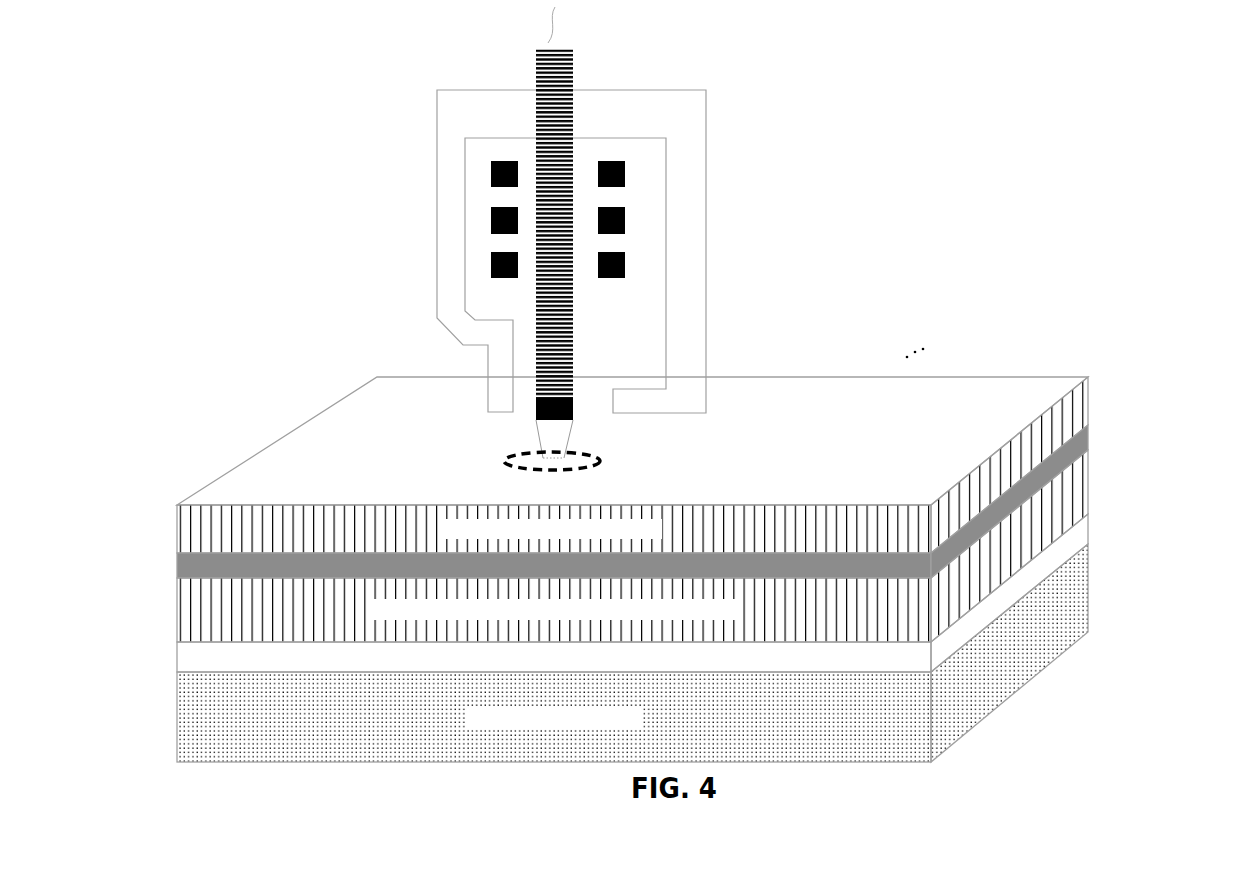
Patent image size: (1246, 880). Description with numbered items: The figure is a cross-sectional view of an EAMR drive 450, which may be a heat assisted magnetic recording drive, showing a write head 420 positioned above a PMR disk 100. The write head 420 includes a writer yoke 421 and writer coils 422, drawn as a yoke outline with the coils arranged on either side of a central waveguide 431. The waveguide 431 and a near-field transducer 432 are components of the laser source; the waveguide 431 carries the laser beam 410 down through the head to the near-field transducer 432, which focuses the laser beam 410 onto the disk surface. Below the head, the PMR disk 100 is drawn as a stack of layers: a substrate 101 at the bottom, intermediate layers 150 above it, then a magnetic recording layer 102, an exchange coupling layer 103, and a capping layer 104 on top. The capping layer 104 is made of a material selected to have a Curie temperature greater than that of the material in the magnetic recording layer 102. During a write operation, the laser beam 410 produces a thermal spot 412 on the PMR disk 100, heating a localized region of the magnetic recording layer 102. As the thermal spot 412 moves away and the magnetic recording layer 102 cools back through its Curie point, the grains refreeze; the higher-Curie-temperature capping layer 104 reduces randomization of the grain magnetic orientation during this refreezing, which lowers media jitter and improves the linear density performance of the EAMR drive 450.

The EAMR drive 450 is at (1088, 73).
The PMR disk 100 is at (1028, 678).
The capping layer 104 is at (632, 465).
The exchange coupling layer 103 is at (632, 501).
The magnetic recording layer 102 is at (632, 546).
The intermediate layers 150 is at (632, 593).
The substrate 101 is at (632, 653).
The write head 420 is at (432, 90).
The writer yoke 421 is at (690, 148).
The writer coils 422 is at (598, 265).
The waveguide 431 is at (573, 59).
The near-field transducer 432 is at (572, 403).
The laser beam 410 is at (553, 445).
The thermal spot 412 is at (502, 460).